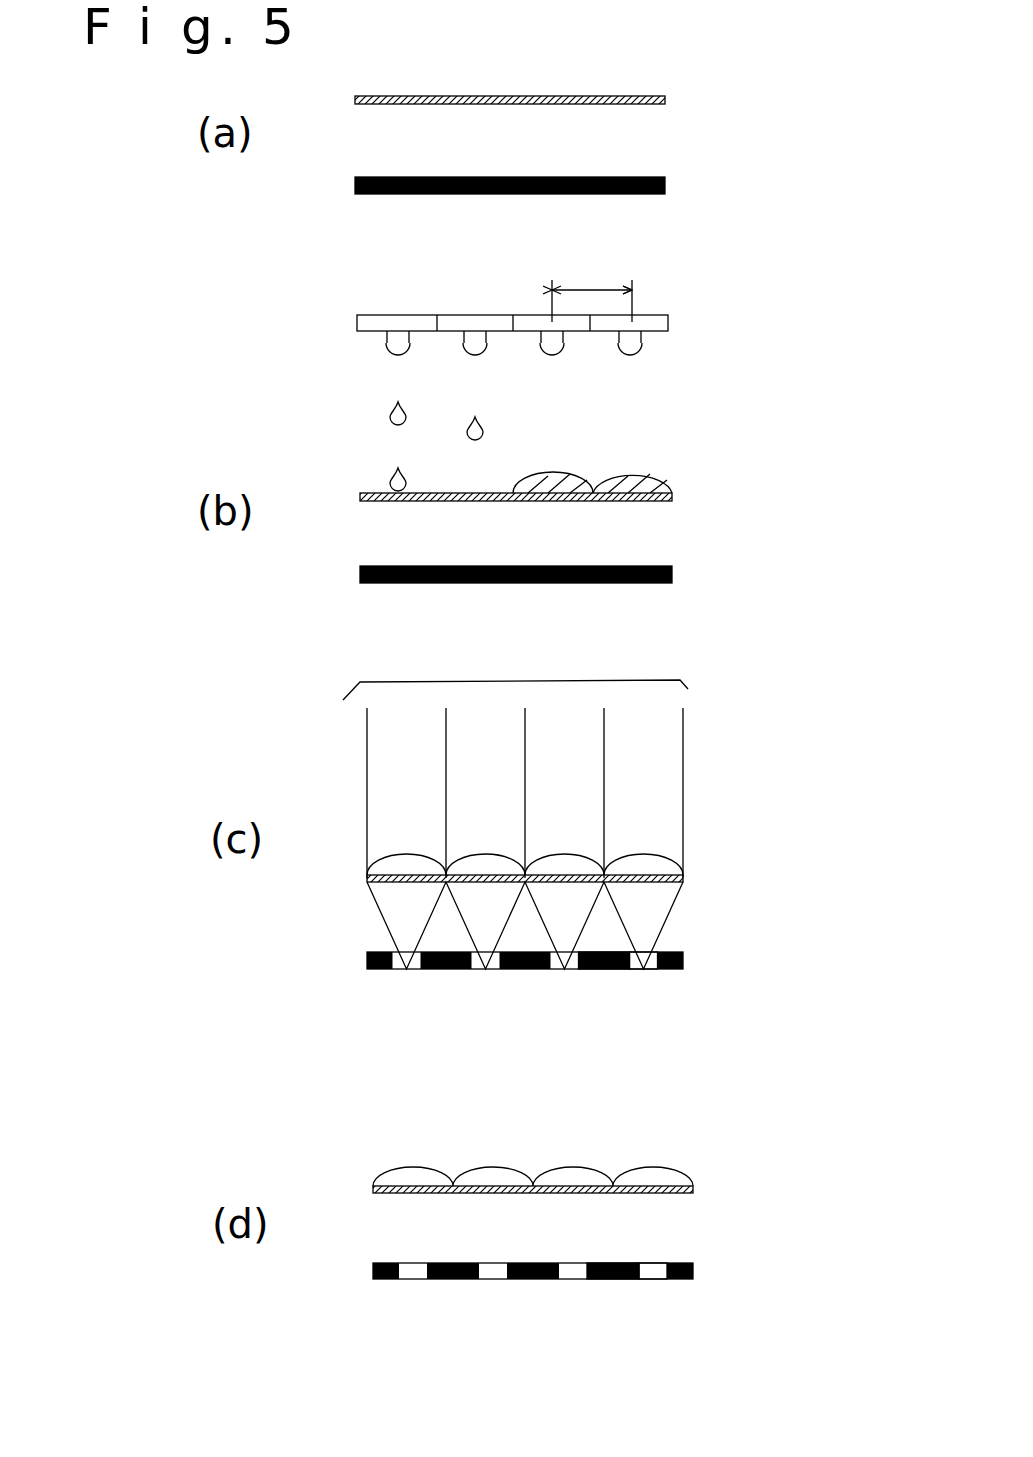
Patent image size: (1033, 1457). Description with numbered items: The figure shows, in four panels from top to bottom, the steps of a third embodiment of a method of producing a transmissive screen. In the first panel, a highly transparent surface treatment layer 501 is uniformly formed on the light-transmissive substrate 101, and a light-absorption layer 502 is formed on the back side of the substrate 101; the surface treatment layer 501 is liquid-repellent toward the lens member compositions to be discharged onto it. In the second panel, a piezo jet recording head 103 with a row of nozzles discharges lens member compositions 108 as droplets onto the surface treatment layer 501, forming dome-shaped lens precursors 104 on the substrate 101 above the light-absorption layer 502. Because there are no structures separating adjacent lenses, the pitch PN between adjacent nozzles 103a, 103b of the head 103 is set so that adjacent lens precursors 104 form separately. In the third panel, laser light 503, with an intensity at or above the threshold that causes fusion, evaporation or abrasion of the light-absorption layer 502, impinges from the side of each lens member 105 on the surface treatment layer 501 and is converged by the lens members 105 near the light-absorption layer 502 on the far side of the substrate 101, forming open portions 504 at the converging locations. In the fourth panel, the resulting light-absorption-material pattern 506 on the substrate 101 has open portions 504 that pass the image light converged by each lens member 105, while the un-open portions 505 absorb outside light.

The surface treatment layer 501 is at (598, 100).
The light-transmissive substrate 101 is at (620, 145).
The light-absorption layer 502 is at (645, 192).
The piezo jet recording head 103 is at (562, 300).
The nozzle 103a is at (645, 318).
The nozzle 103b is at (530, 322).
The pitch between adjacent nozzles PN is at (592, 284).
The lens member compositions 108 is at (390, 410).
The lens precursors 104 is at (655, 478).
The laser light 503 is at (515, 802).
The lens member 105 is at (665, 870).
The light-absorption-material pattern 506 is at (693, 1265).
The un-open portions 505 is at (602, 969).
The open portions 504 is at (655, 963).